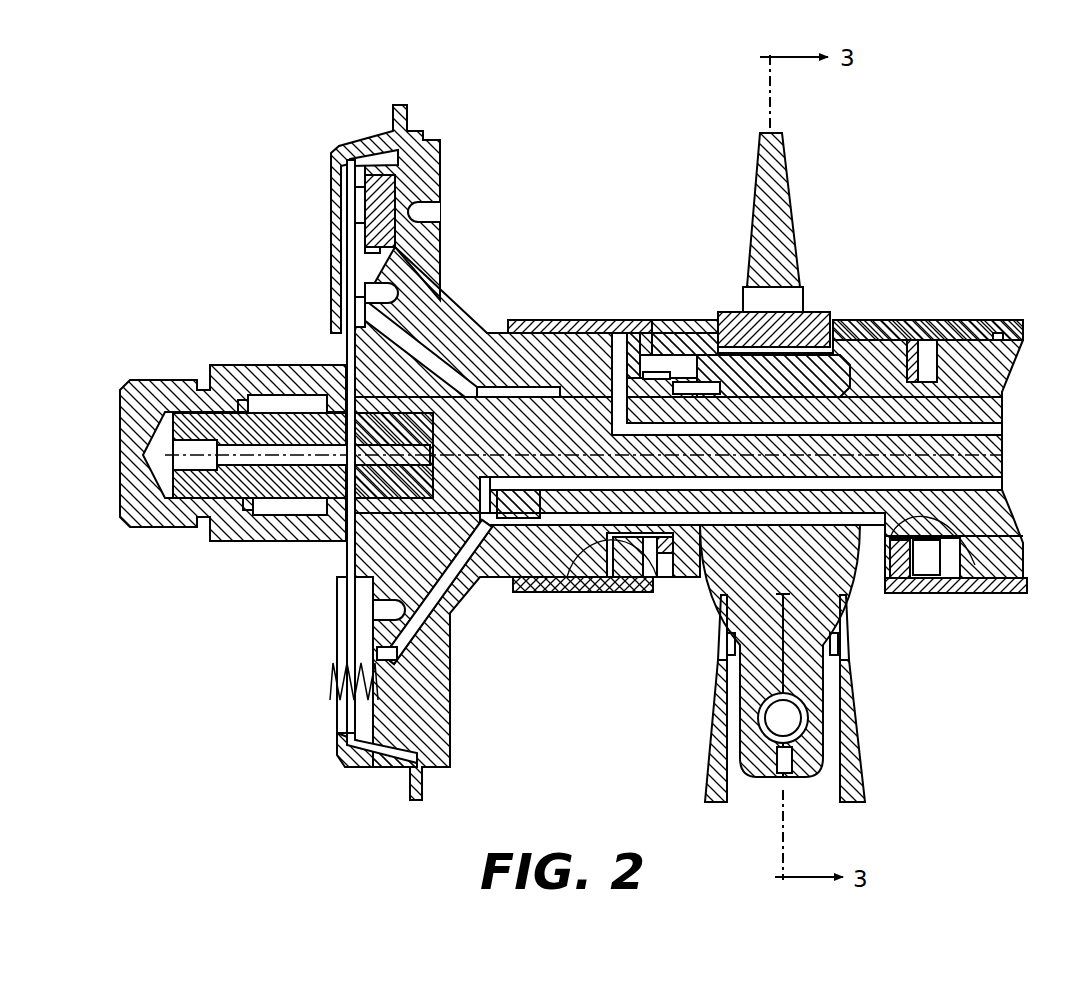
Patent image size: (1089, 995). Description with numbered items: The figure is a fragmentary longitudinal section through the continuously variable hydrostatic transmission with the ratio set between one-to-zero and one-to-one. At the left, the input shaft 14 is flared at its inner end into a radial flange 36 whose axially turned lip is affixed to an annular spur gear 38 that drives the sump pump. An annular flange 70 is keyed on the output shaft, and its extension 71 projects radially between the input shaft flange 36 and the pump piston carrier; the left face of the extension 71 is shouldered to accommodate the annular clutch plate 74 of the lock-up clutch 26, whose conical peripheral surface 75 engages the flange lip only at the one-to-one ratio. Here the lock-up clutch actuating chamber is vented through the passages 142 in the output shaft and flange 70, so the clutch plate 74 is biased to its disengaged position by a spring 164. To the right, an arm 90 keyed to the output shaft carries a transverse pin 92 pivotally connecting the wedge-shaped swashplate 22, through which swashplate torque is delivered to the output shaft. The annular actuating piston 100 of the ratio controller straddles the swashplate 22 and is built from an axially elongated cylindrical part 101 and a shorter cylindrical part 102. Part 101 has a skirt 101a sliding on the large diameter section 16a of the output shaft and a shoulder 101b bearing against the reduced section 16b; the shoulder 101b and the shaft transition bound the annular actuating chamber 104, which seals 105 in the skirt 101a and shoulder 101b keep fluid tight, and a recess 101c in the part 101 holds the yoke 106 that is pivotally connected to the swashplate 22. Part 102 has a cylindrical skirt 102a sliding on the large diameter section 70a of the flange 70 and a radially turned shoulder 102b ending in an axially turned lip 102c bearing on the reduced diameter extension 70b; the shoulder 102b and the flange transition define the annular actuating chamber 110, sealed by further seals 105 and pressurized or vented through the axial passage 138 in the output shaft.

The input shaft 14 is at (165, 380).
The large diameter section of output shaft 16a is at (970, 370).
The reduced section of output shaft 16b is at (872, 540).
The swashplate 22 is at (862, 766).
The lock-up clutch 26 is at (362, 214).
The radial flange 36 is at (343, 556).
The annular spur gear 38 is at (392, 765).
The annular flange 70 is at (435, 303).
The large diameter cylindrical section of output shaft flange 70a is at (548, 585).
The reduced diameter cylindrical extension of output shaft flange 70b is at (588, 600).
The extension of flange 71 is at (435, 185).
The annular clutch plate 74 is at (380, 707).
The conical peripheral surface 75 is at (355, 747).
The arm 90 is at (708, 600).
The transverse pin 92 is at (770, 725).
The annular actuating piston 100 is at (868, 296).
The axially elongated cylindrical part 101 is at (903, 320).
The skirt 101a is at (988, 320).
The shoulder 101b is at (878, 553).
The recess 101c is at (808, 340).
The axially shorter cylindrical part 102 is at (582, 320).
The cylindrical skirt 102a is at (612, 350).
The radially turned shoulder 102b is at (690, 330).
The axially turned lip 102c is at (669, 556).
The annular actuating chamber 104 is at (945, 565).
The seals 105 is at (539, 320).
The yoke 106 is at (736, 318).
The annular actuating chamber 110 is at (624, 333).
The axial passage 138 is at (977, 426).
The passages 142 is at (985, 477).
The spring 164 is at (330, 689).